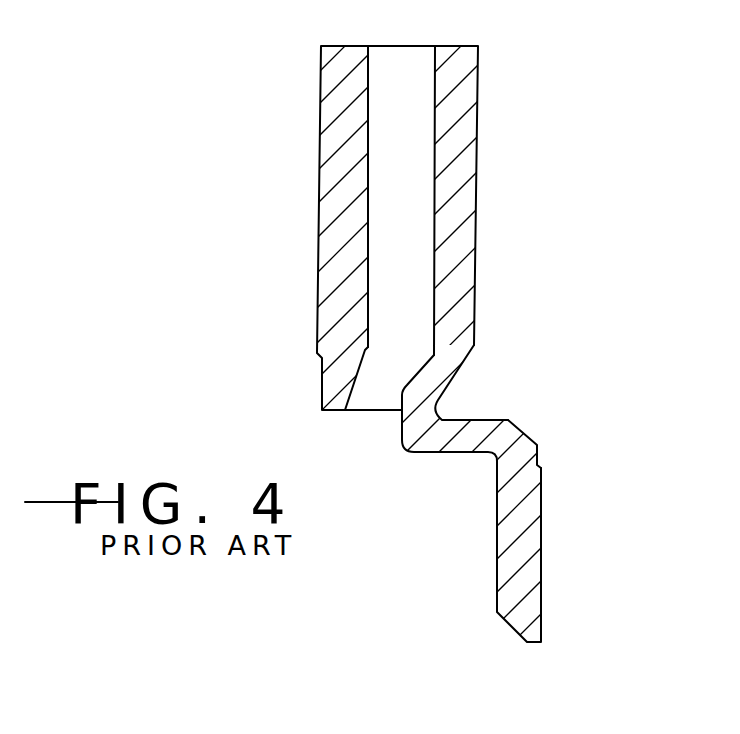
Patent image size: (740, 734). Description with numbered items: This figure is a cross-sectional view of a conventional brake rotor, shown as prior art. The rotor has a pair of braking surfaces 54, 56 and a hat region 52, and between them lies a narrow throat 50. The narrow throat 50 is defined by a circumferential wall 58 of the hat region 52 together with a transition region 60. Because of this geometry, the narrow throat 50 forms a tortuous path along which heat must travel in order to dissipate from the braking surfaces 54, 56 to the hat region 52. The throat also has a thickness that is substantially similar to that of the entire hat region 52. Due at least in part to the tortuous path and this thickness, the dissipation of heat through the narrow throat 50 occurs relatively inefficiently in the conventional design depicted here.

The narrow throat 50 is at (405, 445).
The hat region 52 is at (530, 505).
The braking surface 54 is at (479, 146).
The braking surface 56 is at (318, 162).
The circumferential wall 58 is at (480, 420).
The transition region 60 is at (528, 435).